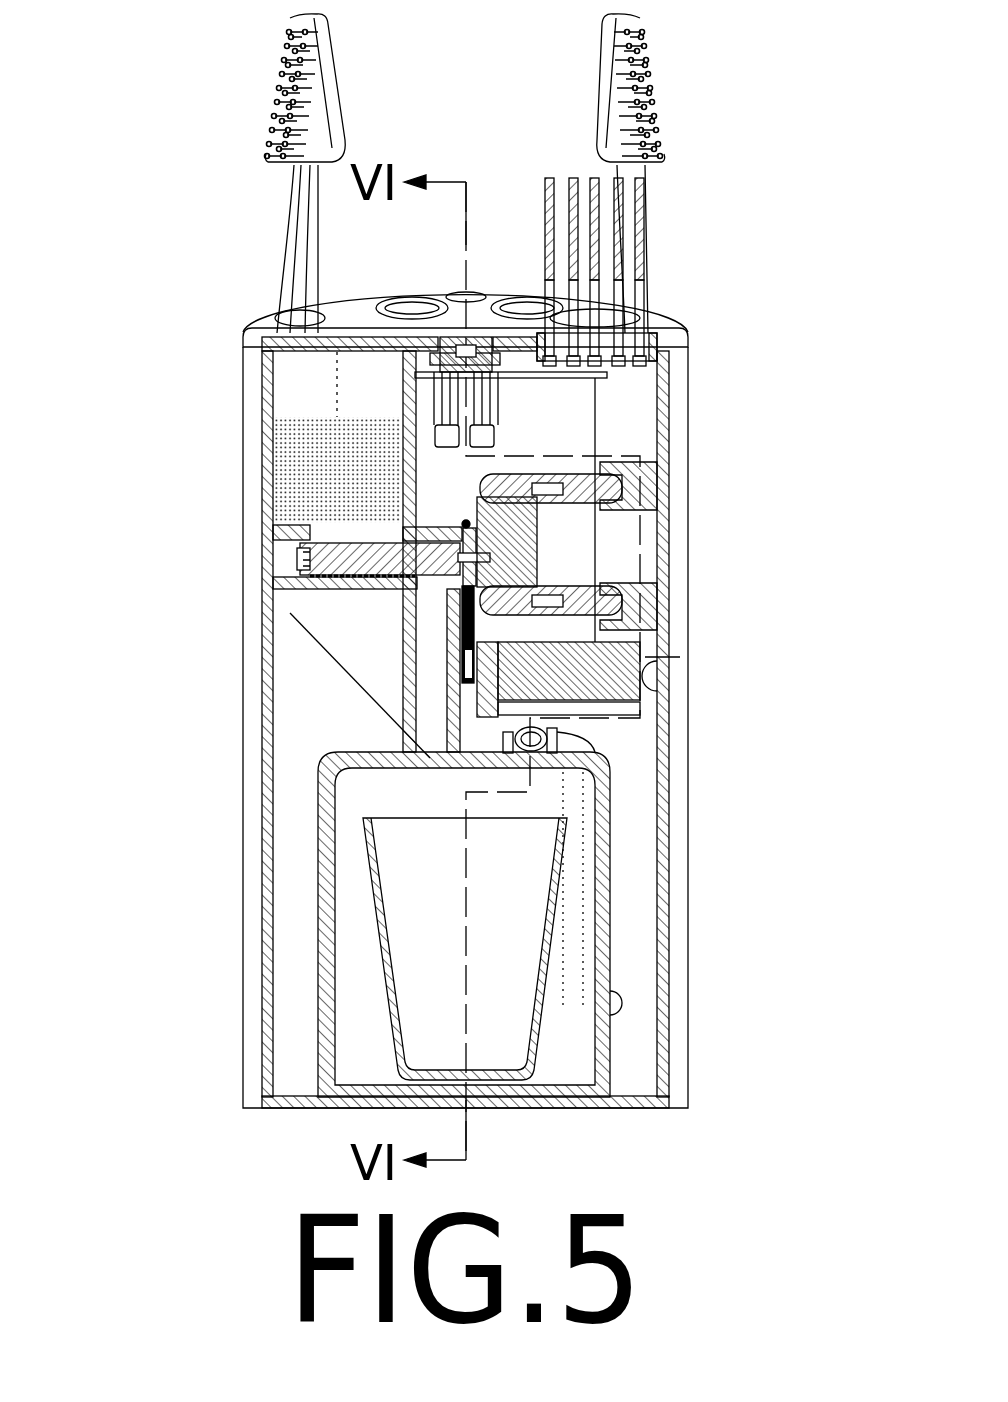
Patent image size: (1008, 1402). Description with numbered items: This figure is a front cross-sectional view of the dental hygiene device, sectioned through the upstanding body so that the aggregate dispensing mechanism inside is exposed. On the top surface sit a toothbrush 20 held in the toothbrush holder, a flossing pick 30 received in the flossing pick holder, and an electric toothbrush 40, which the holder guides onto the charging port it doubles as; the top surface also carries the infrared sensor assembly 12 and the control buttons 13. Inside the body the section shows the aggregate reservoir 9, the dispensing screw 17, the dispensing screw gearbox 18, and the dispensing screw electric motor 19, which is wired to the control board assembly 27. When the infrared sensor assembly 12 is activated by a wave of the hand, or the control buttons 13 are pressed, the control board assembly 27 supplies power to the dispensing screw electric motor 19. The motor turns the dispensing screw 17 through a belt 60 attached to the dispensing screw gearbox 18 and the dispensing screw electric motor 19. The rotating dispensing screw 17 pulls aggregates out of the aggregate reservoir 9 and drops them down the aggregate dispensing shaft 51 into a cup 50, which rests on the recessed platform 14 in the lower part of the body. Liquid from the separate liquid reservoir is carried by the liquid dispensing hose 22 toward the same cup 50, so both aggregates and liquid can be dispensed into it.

The aggregate reservoir 9 is at (388, 372).
The infrared sensor assembly 12 is at (300, 322).
The control buttons 13 is at (483, 293).
The recessed platform 14 is at (370, 1073).
The dispensing screw 17 is at (340, 508).
The dispensing screw gearbox 18 is at (537, 540).
The dispensing screw electric motor 19 is at (656, 659).
The toothbrush 20 is at (667, 92).
The liquid dispensing hose 22 is at (583, 942).
The control board assembly 27 is at (560, 378).
The flossing pick 30 is at (643, 240).
The electric toothbrush 40 is at (273, 97).
The cup 50 is at (373, 933).
The aggregate dispensing shaft 51 is at (455, 636).
The belt 60 is at (300, 556).